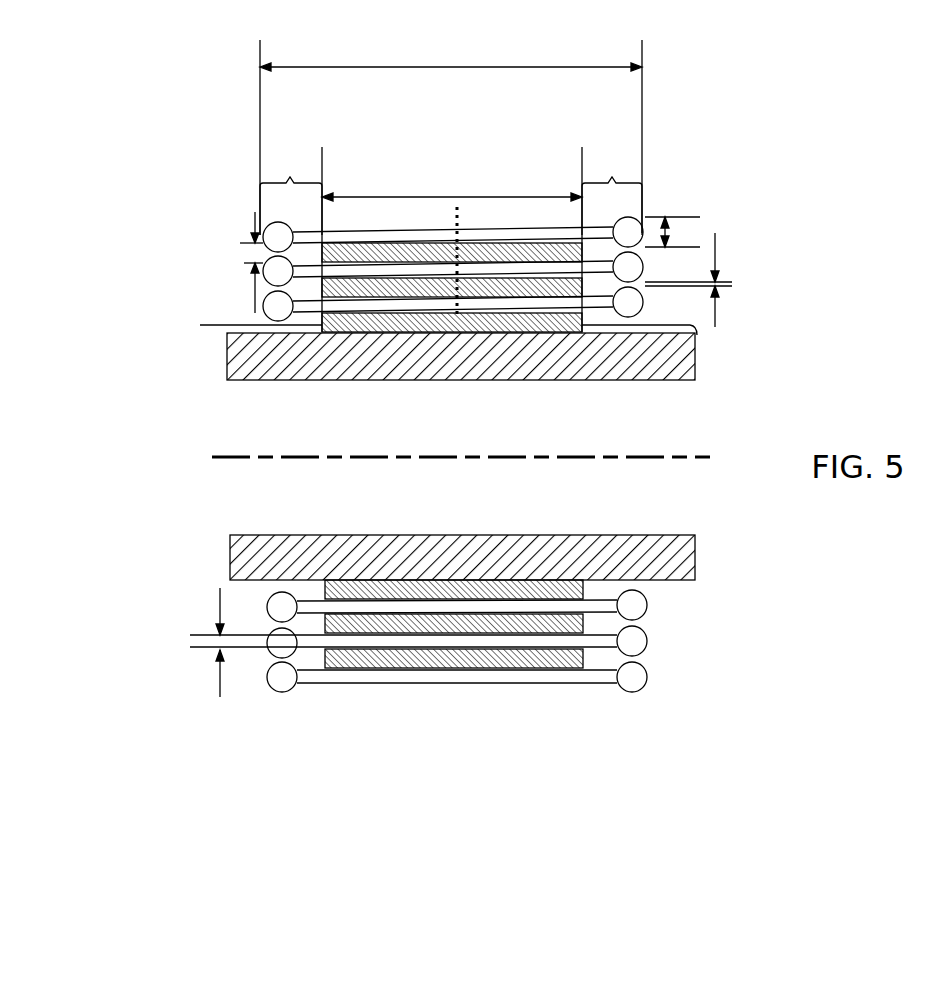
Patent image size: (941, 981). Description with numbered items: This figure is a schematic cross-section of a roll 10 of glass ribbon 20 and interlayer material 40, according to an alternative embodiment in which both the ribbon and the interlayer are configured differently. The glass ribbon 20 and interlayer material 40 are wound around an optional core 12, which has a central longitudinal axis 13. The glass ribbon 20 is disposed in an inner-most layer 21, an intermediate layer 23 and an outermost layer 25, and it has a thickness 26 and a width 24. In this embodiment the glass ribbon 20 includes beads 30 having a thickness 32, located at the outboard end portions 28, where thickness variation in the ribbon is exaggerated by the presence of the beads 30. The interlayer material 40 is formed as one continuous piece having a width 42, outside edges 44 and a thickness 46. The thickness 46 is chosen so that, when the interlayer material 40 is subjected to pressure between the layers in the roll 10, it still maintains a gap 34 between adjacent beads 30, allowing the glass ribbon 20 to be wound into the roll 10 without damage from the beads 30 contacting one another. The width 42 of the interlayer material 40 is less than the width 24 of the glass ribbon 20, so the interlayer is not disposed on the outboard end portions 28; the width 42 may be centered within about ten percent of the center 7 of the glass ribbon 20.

The center 7 is at (458, 215).
The roll 10 is at (453, 709).
The core 12 is at (230, 562).
The central longitudinal axis 13 is at (223, 457).
The glass ribbon 20 is at (262, 688).
The inner-most layer 21 is at (433, 607).
The intermediate layer 23 is at (555, 640).
The width 24 is at (522, 66).
The outermost layer 25 is at (417, 677).
The thickness 26 is at (218, 688).
The outboard end portions 28 is at (290, 183).
The beads 30 is at (632, 677).
The thickness 32 is at (668, 233).
The gap 34 is at (717, 313).
The interlayer material 40 is at (410, 658).
The width 42 is at (453, 197).
The outside edges 44 is at (240, 325).
The thickness 46 is at (250, 276).